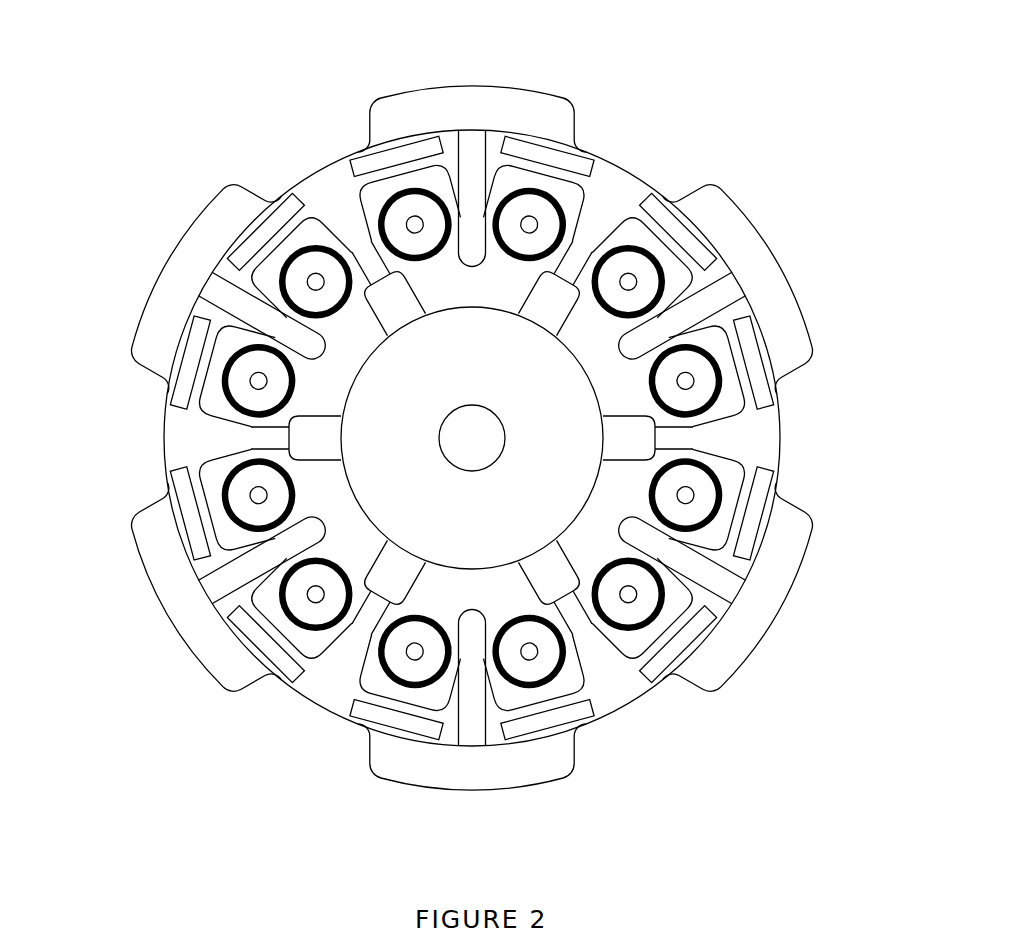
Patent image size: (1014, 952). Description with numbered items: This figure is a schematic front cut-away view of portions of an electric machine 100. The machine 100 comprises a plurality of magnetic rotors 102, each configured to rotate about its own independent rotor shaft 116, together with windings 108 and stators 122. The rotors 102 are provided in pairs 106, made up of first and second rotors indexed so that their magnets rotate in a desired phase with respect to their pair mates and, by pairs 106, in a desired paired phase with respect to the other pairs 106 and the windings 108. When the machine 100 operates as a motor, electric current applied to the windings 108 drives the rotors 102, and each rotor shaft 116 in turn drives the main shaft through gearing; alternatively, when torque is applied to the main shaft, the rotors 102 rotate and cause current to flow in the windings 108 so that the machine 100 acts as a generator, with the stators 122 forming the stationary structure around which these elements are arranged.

The electric machine 100 is at (380, 798).
The magnetic rotor 102 is at (698, 366).
The rotor pair 106 is at (698, 366).
The winding 108 is at (290, 193).
The rotor shaft 116 is at (632, 277).
The stator 122 is at (474, 255).